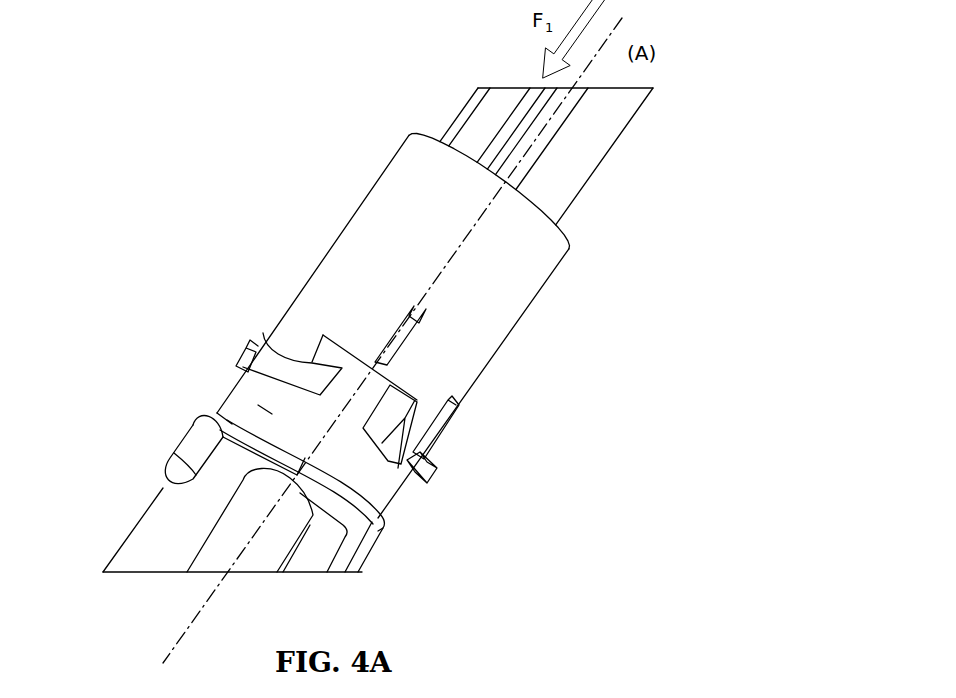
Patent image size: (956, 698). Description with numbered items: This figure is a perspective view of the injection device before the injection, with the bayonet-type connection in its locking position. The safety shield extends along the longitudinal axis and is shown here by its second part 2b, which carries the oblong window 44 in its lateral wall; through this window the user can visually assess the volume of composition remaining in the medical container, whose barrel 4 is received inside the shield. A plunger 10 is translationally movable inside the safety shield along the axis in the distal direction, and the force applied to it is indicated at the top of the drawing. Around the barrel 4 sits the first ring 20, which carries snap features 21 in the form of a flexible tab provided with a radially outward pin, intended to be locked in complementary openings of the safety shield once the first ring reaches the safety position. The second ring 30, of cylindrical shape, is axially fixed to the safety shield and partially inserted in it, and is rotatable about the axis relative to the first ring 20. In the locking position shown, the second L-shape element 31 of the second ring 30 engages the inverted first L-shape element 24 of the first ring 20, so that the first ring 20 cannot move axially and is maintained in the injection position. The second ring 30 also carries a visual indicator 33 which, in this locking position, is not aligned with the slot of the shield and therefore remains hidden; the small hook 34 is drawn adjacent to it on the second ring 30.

The plunger 10 is at (585, 136).
The first ring 20 is at (482, 340).
The snap features 21 is at (423, 465).
The first L-shape element 24 is at (460, 408).
The second ring 30 is at (387, 490).
The second L-shape element 31 is at (280, 357).
The visual indicator 33 is at (270, 417).
The clip hook 34 is at (258, 395).
The window 44 is at (300, 548).
The barrel 4 is at (218, 563).
The second part 2b is at (153, 517).